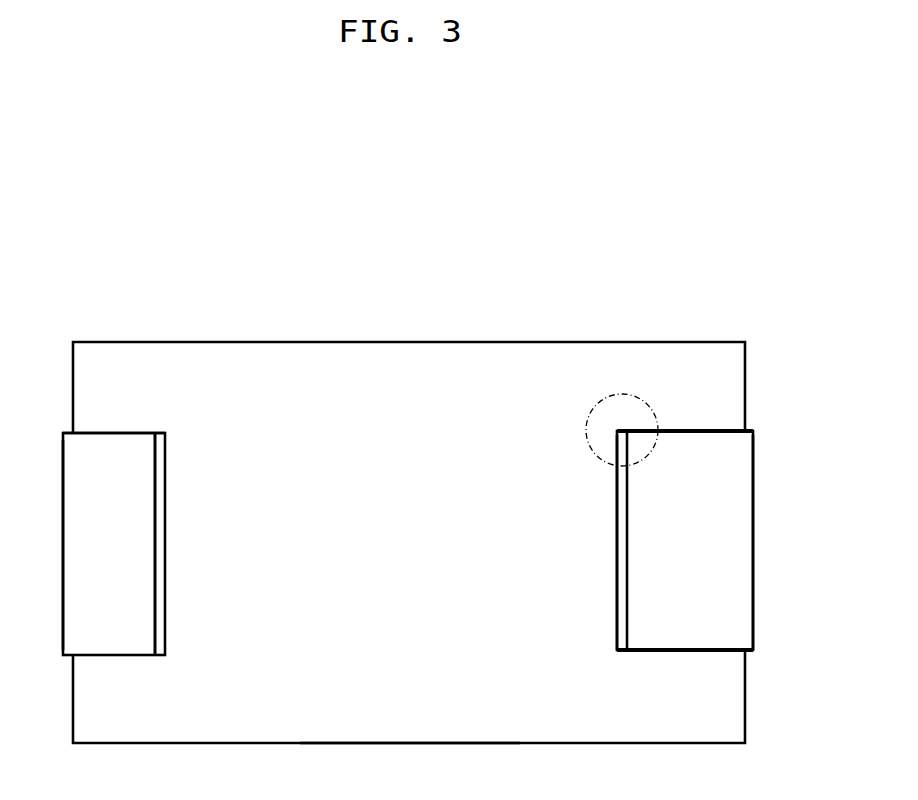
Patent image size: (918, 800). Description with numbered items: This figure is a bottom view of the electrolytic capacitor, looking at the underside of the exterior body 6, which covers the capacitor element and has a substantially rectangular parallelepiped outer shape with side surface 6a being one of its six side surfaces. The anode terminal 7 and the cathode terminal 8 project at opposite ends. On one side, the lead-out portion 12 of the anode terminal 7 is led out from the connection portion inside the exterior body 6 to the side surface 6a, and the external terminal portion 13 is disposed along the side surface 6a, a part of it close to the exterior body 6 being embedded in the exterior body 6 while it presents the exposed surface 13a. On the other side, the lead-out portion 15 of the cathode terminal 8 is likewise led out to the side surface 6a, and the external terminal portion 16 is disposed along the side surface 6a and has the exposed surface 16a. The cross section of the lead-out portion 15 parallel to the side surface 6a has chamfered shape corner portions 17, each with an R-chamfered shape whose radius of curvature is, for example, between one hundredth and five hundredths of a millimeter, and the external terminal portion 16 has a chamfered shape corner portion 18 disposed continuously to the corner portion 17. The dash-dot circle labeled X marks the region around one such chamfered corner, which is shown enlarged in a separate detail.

The exterior body 6 is at (327, 365).
The side surface 6a is at (388, 724).
The anode terminal 7 is at (90, 445).
The cathode terminal 8 is at (727, 445).
The lead-out portion 12 is at (165, 578).
The external terminal portion 13 is at (88, 565).
The exposed surface 13a is at (93, 515).
The lead-out portion 15 is at (625, 625).
The external terminal portion 16 is at (735, 563).
The exposed surface 16a is at (730, 512).
The chamfered shape corner portion 17 is at (620, 427).
The chamfered shape corner portion 18 is at (714, 426).
The enlarged detail region X is at (637, 397).